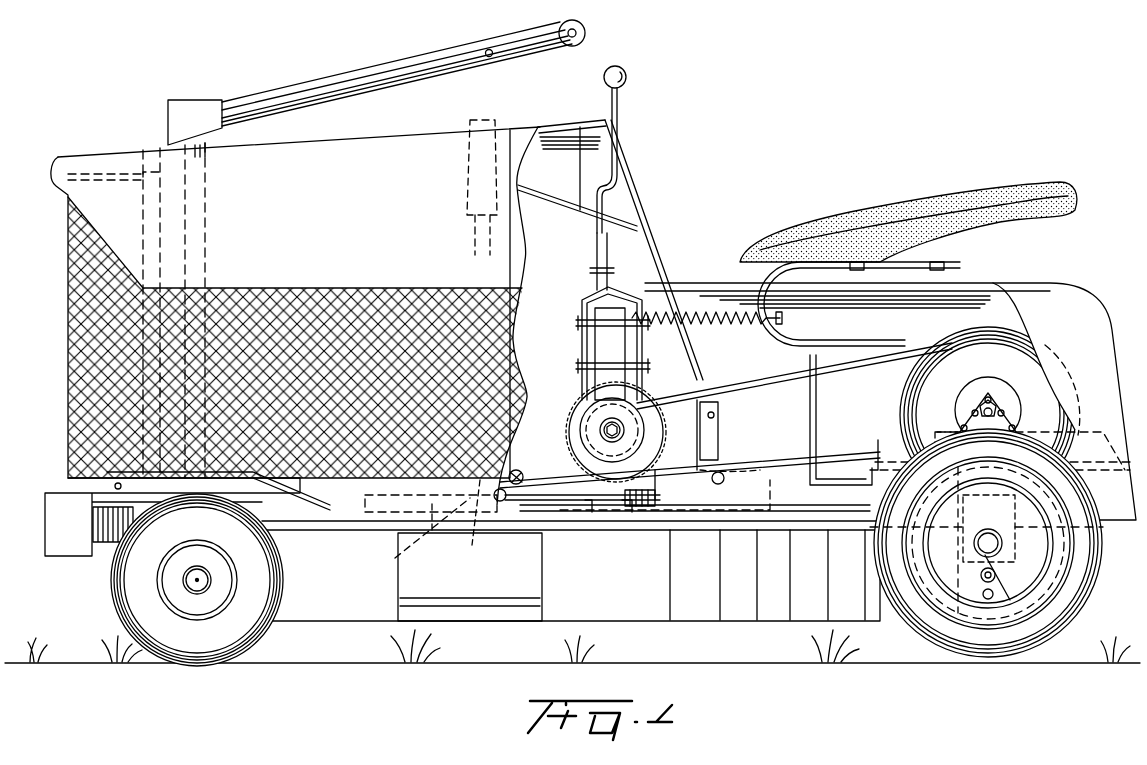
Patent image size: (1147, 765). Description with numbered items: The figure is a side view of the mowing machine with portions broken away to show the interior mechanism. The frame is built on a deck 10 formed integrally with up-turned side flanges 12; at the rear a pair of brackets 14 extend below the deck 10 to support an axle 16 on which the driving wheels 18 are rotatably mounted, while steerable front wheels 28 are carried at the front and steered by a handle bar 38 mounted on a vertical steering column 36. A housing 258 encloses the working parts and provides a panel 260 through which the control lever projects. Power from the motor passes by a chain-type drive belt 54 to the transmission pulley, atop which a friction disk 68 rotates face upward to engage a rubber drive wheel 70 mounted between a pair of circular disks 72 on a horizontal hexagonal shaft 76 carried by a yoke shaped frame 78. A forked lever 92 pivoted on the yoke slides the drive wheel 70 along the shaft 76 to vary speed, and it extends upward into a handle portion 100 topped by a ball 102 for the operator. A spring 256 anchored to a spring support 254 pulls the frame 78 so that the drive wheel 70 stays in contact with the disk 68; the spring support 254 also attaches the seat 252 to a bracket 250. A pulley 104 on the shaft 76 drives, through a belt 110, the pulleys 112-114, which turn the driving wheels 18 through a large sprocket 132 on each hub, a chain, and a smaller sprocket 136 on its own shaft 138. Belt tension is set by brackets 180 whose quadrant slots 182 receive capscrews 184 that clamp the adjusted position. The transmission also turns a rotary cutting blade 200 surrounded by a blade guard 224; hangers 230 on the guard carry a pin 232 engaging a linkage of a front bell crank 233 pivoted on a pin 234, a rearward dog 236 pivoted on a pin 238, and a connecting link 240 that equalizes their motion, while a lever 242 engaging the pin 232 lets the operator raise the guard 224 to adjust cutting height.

The deck 10 is at (700, 526).
The side flanges 12 is at (870, 510).
The brackets 14 is at (1088, 541).
The axle 16 is at (992, 548).
The driving wheel 18 is at (927, 632).
The front wheels 28 is at (125, 597).
The steering column 36 is at (205, 221).
The handle bar 38 is at (350, 78).
The drive belt 54 is at (590, 510).
The friction disk 68 is at (626, 512).
The drive wheel 70 is at (692, 400).
The circular disks 72 is at (660, 433).
The hexagonal shaft 76 is at (600, 428).
The yoke shaped frame 78 is at (618, 310).
The forked lever 92 is at (606, 240).
The handle portion 100 is at (620, 140).
The ball 102 is at (628, 72).
The pulley 104 is at (592, 410).
The belt 110 is at (752, 385).
The pulleys 112-114 is at (1015, 342).
The sprocket 132 is at (1052, 556).
The sprocket 136 is at (1040, 388).
The shaft 138 is at (996, 402).
The brackets 180 is at (885, 448).
The quadrant slots 182 is at (920, 418).
The capscrews 184 is at (1045, 412).
The rotary cutting blade 200 is at (520, 606).
The blade guard 224 is at (432, 532).
The hangers 230 is at (482, 502).
The pin 232 is at (748, 505).
The front bell crank 233 is at (472, 524).
The pin 234 is at (520, 485).
The rearward dog 236 is at (812, 447).
The pin 238 is at (718, 456).
The link 240 is at (658, 505).
The lever 242 is at (490, 124).
The bracket 250 is at (814, 405).
The seat 252 is at (893, 205).
The spring support 254 is at (785, 338).
The spring 256 is at (746, 327).
The housing 258 is at (105, 158).
The panel 260 is at (580, 127).